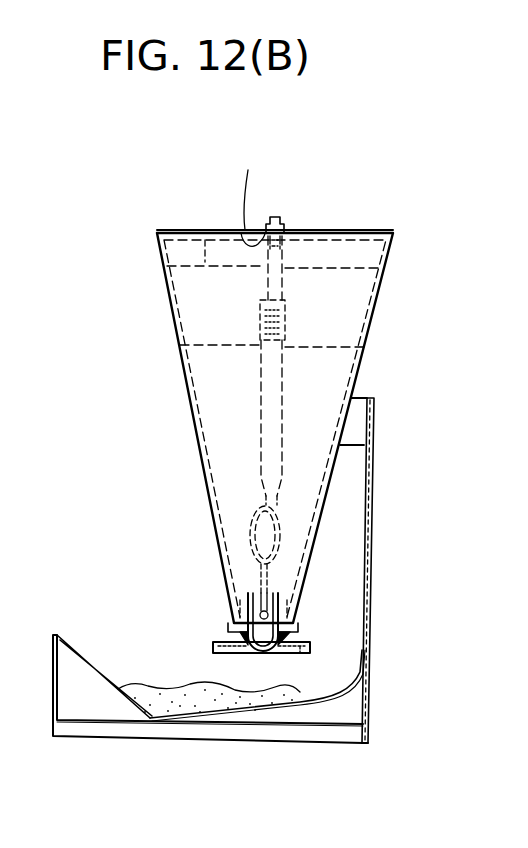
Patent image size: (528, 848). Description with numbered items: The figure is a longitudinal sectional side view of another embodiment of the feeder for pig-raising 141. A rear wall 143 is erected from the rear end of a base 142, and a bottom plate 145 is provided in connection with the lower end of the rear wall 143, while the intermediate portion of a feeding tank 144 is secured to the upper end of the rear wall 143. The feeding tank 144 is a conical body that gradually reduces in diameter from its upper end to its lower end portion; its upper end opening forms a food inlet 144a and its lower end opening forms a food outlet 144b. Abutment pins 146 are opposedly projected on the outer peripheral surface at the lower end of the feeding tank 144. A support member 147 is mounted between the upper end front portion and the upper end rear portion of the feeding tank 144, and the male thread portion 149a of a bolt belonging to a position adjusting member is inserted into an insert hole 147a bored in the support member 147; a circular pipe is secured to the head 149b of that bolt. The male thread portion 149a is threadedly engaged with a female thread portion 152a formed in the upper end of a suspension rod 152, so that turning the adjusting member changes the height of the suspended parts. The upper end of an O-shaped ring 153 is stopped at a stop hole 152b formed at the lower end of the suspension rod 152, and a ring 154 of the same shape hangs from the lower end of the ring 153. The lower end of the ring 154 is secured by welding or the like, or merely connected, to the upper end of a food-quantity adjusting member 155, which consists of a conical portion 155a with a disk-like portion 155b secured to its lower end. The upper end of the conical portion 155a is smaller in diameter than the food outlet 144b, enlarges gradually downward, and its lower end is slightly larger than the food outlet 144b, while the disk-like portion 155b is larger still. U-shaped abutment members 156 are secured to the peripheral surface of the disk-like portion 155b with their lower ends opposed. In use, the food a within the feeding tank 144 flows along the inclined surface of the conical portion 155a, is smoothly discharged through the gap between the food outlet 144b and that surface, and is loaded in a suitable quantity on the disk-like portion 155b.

The feeder for pig-raising 141 is at (405, 188).
The base 142 is at (195, 730).
The rear wall 143 is at (374, 500).
The feeding tank 144 is at (168, 296).
The food inlet 144a is at (171, 229).
The food outlet 144b is at (232, 632).
The bottom plate 145 is at (290, 705).
The abutment pin 146 is at (270, 614).
The support member 147 is at (206, 237).
The insert hole 147a is at (264, 189).
The male thread portion 149a is at (283, 290).
The head of bolt 149b is at (288, 228).
The suspension rod 152 is at (280, 415).
The female thread portion 152a is at (288, 326).
The stop hole 152b is at (268, 500).
The O-shaped ring 153 is at (282, 538).
The ring 154 is at (285, 567).
The food-quantity adjusting member 155 is at (293, 665).
The conical portion 155a is at (300, 628).
The disk-like portion 155b is at (215, 650).
The U-shaped abutment member 156 is at (233, 627).
The food a is at (152, 719).